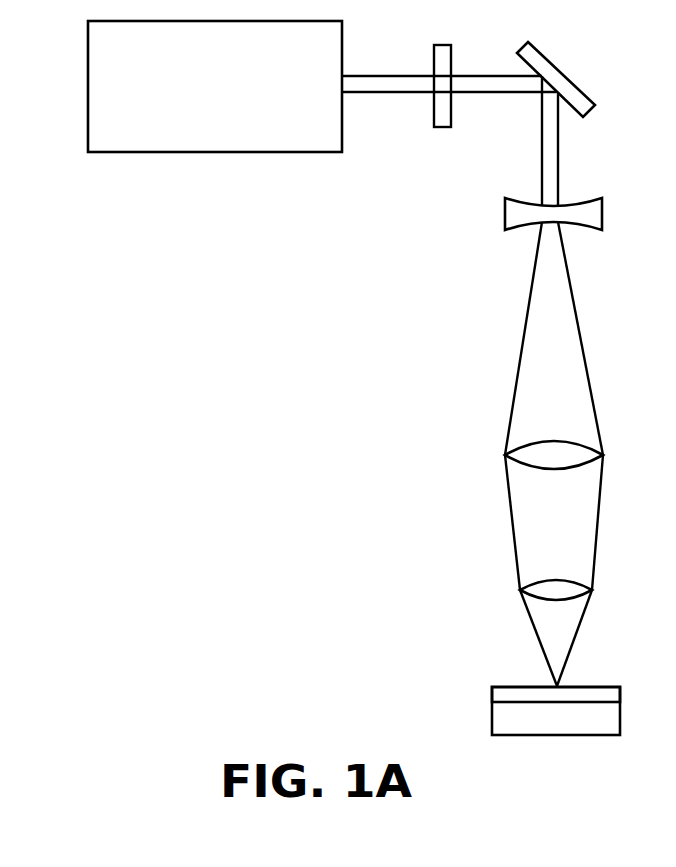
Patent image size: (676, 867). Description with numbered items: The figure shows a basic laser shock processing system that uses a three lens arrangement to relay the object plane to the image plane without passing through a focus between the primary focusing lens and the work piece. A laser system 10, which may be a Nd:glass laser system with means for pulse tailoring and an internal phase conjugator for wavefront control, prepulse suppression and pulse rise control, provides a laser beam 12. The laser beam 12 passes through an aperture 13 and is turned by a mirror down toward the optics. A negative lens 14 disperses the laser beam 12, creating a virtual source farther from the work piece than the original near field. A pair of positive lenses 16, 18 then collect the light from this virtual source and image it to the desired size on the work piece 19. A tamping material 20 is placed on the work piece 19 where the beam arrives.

The laser system 10 is at (247, 152).
The laser beam 12 is at (377, 76).
The aperture 13 is at (434, 112).
The negative lens 14 is at (505, 215).
The positive lens 16 is at (505, 455).
The positive lens 18 is at (520, 590).
The work piece 19 is at (518, 685).
The tamping material 20 is at (504, 687).